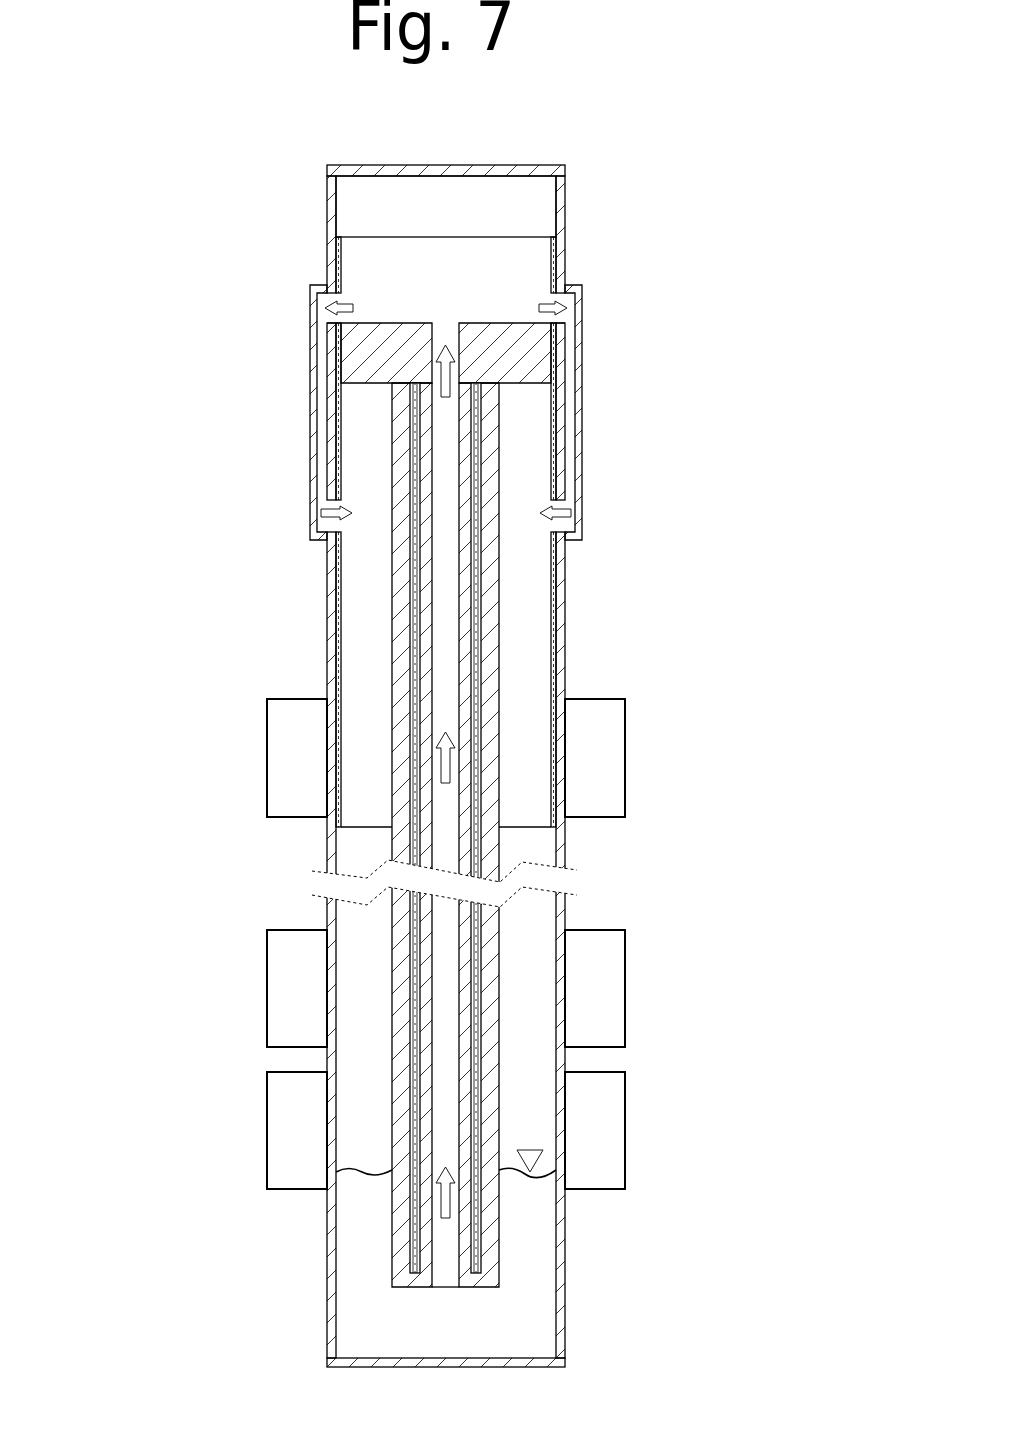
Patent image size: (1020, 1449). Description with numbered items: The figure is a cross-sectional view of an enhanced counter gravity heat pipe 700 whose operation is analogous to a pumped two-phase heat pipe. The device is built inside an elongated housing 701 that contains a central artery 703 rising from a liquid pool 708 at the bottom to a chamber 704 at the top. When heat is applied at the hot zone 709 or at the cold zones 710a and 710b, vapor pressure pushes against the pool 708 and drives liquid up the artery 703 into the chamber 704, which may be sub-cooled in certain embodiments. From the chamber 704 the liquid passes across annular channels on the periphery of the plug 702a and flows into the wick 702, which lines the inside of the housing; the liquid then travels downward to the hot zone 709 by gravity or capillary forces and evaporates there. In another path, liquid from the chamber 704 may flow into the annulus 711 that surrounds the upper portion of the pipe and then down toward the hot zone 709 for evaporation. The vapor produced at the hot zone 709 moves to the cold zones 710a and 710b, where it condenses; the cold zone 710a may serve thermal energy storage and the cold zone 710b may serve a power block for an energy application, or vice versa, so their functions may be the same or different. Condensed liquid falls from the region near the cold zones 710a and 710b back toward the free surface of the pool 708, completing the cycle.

The sample container assembly 700 is at (167, 121).
The container housing cap 701 is at (327, 160).
The wick 702 is at (332, 630).
The plug 702a is at (358, 355).
The artery 703 is at (495, 660).
The chamber 704 is at (508, 195).
The pool 708 is at (524, 1312).
The hot zone 709 is at (295, 761).
The cold zone 710a is at (282, 1013).
The cold zone 710b is at (600, 1009).
The annulus 711 is at (583, 433).